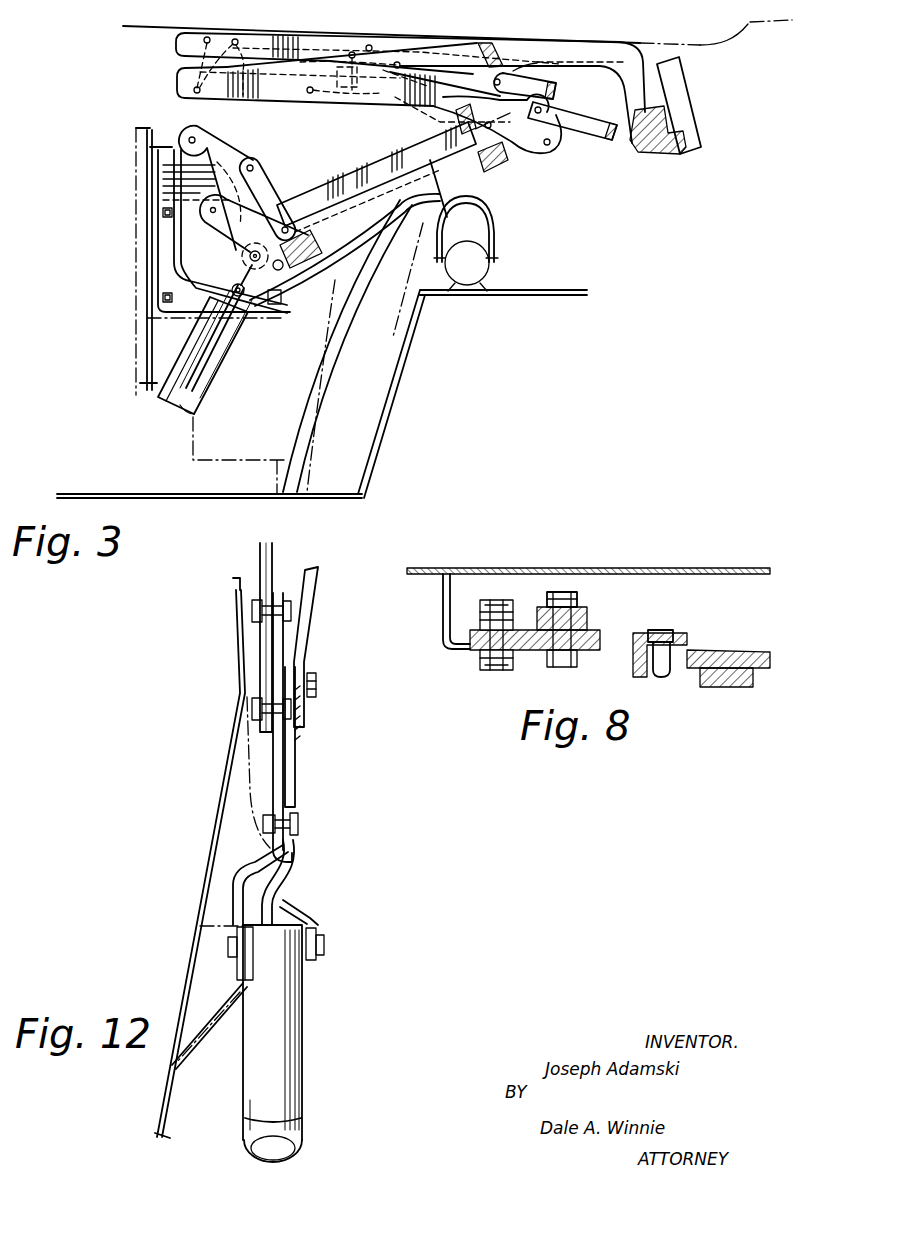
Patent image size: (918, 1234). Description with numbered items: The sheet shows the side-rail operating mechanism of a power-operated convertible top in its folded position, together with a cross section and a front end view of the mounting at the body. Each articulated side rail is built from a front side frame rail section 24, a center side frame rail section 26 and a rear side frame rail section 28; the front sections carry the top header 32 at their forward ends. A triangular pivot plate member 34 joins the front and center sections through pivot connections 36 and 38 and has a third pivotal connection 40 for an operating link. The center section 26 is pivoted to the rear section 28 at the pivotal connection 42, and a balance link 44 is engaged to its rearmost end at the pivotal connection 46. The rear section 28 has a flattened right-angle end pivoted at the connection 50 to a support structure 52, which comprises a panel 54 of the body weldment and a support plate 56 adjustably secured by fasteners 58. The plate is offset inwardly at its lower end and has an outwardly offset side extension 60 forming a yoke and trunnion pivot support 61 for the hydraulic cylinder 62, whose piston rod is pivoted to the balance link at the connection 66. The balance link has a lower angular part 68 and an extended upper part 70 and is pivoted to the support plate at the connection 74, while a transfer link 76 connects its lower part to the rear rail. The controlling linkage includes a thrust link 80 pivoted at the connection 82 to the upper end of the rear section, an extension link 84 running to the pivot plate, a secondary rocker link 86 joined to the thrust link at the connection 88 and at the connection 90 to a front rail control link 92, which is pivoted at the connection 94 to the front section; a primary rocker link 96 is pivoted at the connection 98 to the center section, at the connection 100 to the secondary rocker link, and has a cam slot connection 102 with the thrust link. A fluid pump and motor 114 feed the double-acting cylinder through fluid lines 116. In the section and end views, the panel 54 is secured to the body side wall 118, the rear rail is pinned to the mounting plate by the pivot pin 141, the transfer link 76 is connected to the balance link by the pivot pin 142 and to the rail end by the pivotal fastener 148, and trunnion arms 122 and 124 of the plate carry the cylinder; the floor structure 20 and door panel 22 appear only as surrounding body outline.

In FIG. 3, the floor shelf 20 is at (540, 292).
In FIG. 3, the door panel 22 is at (307, 413).
In FIG. 3, the front side frame rail section 24 is at (465, 72).
In FIG. 3, the center side frame rail section 26 is at (250, 102).
In FIG. 8, the rear side frame rail section 28 is at (548, 607).
In FIG. 12, the rear side frame rail section 28 is at (262, 640).
In FIG. 3, the top header 32 is at (680, 157).
In FIG. 3, the pivot plate member 34 is at (185, 62).
In FIG. 3, the pivot connection 36 is at (207, 38).
In FIG. 3, the pivot connection 38 is at (197, 93).
In FIG. 3, the third pivotal connection 40 is at (237, 40).
In FIG. 3, the pivotal connection 42 is at (490, 128).
In FIG. 3, the balance link 44 is at (400, 170).
In FIG. 12, the balance link 44 is at (318, 600).
In FIG. 3, the pivotal connection 46 is at (547, 147).
In FIG. 3, the pivotal connection 50 is at (198, 136).
In FIG. 12, the pivotal connection 50 is at (302, 708).
In FIG. 3, the support structure 52 is at (135, 220).
In FIG. 12, the support structure 52 is at (228, 946).
In FIG. 3, the panel 54 is at (135, 370).
In FIG. 8, the panel 54 is at (443, 612).
In FIG. 12, the panel 54 is at (205, 1042).
In FIG. 3, the support plate 56 is at (170, 245).
In FIG. 8, the support plate 56 is at (590, 650).
In FIG. 12, the support plate 56 is at (283, 785).
In FIG. 3, the fasteners 58 is at (163, 212).
In FIG. 3, the side extension 60 is at (207, 283).
In FIG. 12, the side extension 60 is at (285, 912).
In FIG. 12, the trunnion pivot support 61 is at (325, 950).
In FIG. 3, the hydraulic cylinder 62 is at (196, 410).
In FIG. 12, the hydraulic cylinder 62 is at (300, 1073).
In FIG. 3, the pivotal connection 66 is at (248, 256).
In FIG. 8, the lower angular part 68 is at (735, 650).
In FIG. 12, the lower angular part 68 is at (296, 752).
In FIG. 8, the extended upper part 70 is at (730, 687).
In FIG. 3, the pivotal connection 74 is at (242, 178).
In FIG. 12, the pivotal connection 74 is at (298, 822).
In FIG. 3, the transfer link 76 is at (283, 195).
In FIG. 8, the transfer link 76 is at (640, 633).
In FIG. 12, the transfer link 76 is at (283, 645).
In FIG. 3, the thrust link 80 is at (395, 98).
In FIG. 3, the pivotal connection 82 is at (553, 112).
In FIG. 3, the extension link 84 is at (323, 63).
In FIG. 3, the secondary rocker link 86 is at (482, 58).
In FIG. 3, the pivotal connection 88 is at (352, 52).
In FIG. 3, the pivotal connection 90 is at (500, 80).
In FIG. 3, the front rail control link 92 is at (399, 62).
In FIG. 3, the pivotal connection 94 is at (370, 46).
In FIG. 3, the primary rocker link 96 is at (318, 100).
In FIG. 3, the pivotal connection 98 is at (307, 91).
In FIG. 3, the pivotal connection 100 is at (436, 60).
In FIG. 3, the cam slot connection 102 is at (338, 100).
In FIG. 3, the fluid pump and motor 114 is at (483, 256).
In FIG. 3, the fluid lines 116 is at (340, 270).
In FIG. 8, the body side wall 118 is at (525, 550).
In FIG. 12, the body side wall 118 is at (205, 880).
In FIG. 12, the trunnion arm 122 is at (240, 970).
In FIG. 12, the trunnion arm 124 is at (322, 922).
In FIG. 8, the pivot pin 141 is at (565, 592).
In FIG. 8, the pivot pin 142 is at (662, 630).
In FIG. 12, the pivotal fastener 148 is at (252, 608).